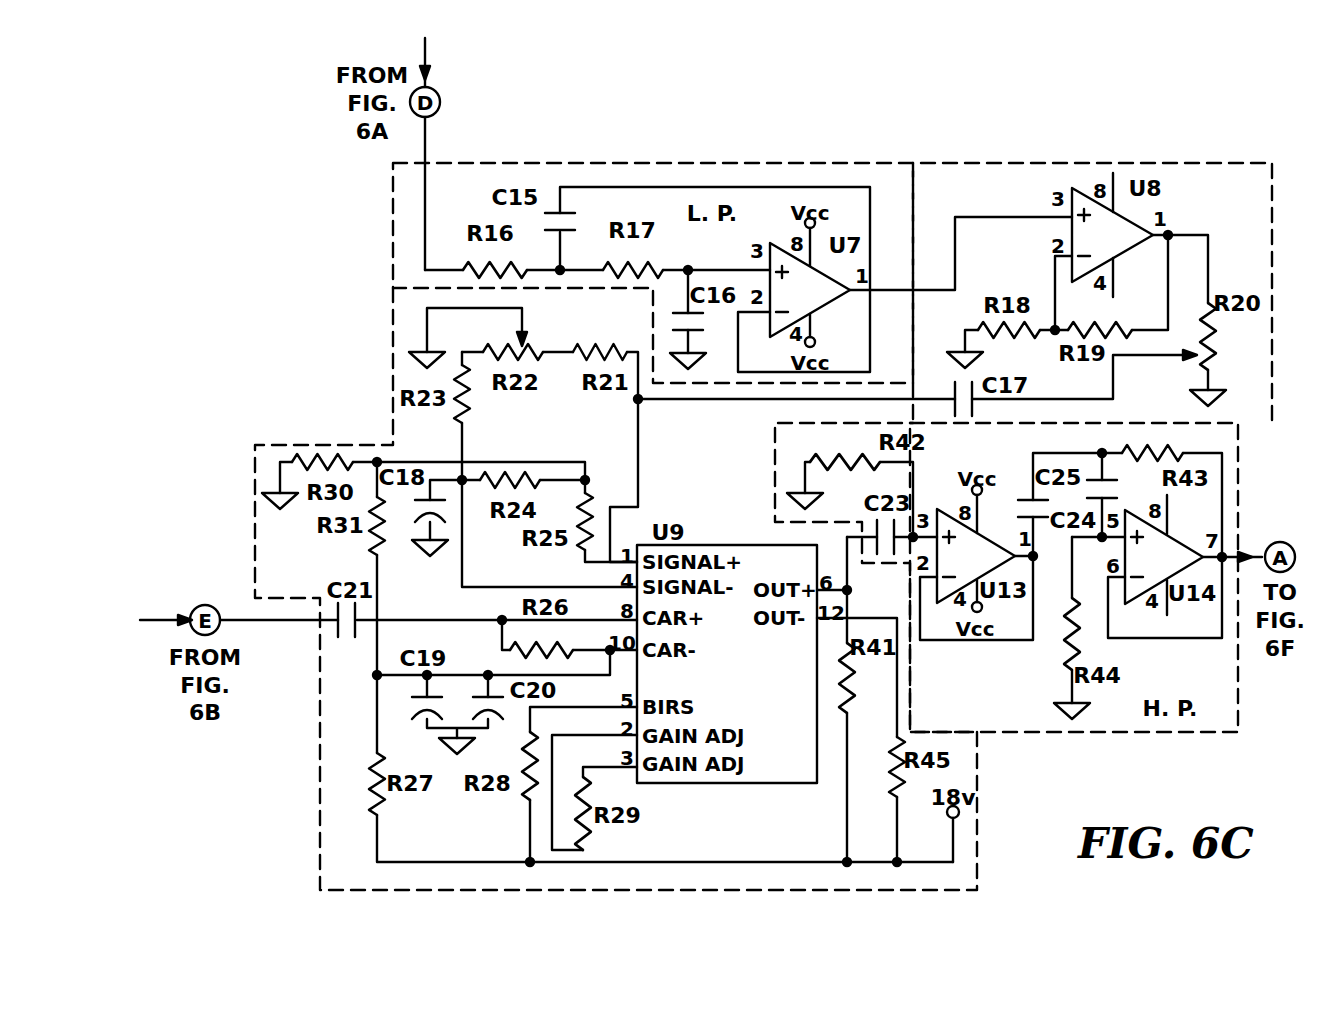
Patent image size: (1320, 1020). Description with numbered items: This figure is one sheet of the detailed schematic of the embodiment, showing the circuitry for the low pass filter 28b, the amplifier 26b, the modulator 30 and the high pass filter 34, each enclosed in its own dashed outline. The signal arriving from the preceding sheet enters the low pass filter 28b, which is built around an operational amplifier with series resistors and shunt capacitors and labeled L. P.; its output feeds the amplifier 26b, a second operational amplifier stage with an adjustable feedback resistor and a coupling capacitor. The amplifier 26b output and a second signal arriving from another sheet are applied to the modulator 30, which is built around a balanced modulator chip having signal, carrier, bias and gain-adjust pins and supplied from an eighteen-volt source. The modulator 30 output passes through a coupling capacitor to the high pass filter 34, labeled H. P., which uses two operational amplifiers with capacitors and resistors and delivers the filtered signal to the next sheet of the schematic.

The low pass filter 28b is at (545, 163).
The amplifier 26b is at (1250, 426).
The modulator 30 is at (977, 760).
The high pass filter 34 is at (1100, 733).